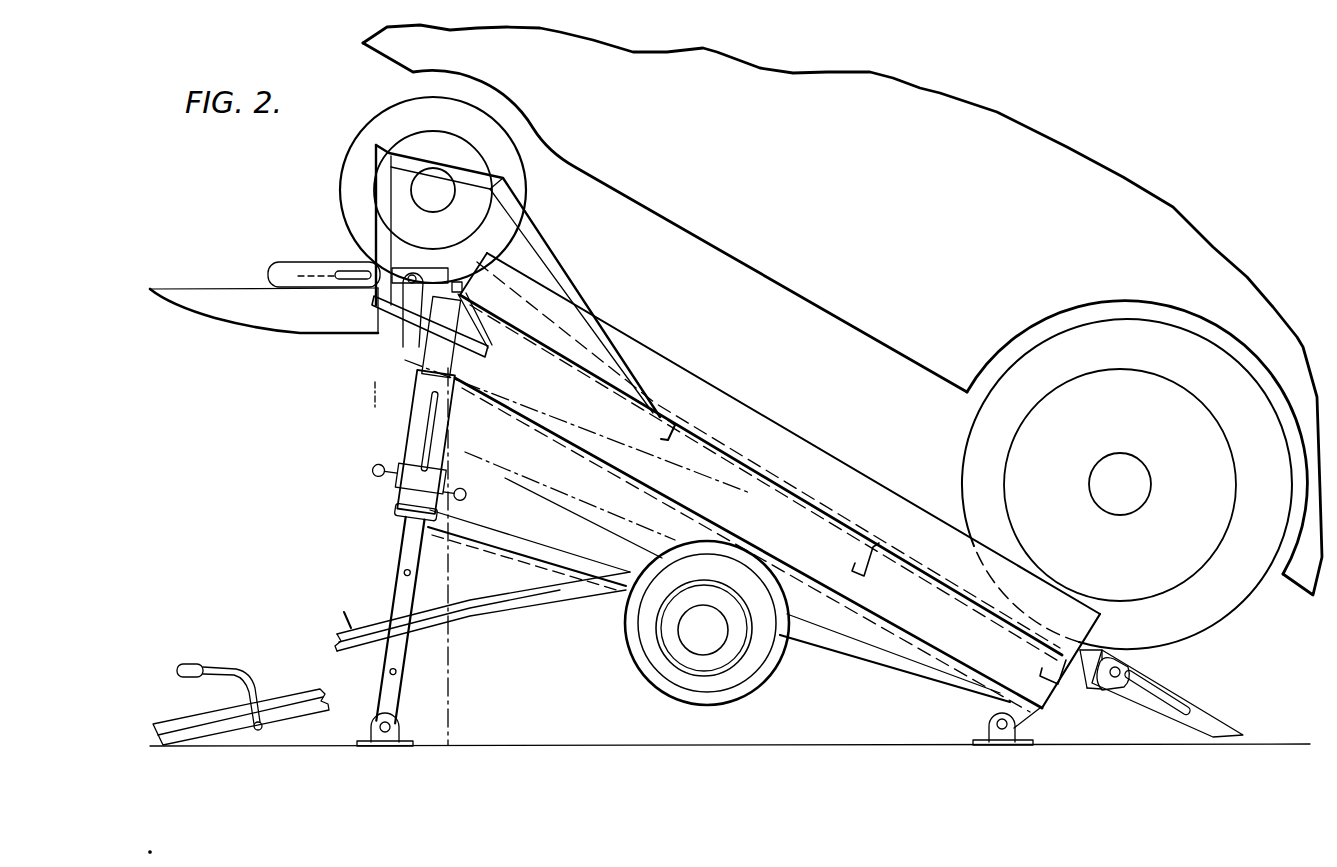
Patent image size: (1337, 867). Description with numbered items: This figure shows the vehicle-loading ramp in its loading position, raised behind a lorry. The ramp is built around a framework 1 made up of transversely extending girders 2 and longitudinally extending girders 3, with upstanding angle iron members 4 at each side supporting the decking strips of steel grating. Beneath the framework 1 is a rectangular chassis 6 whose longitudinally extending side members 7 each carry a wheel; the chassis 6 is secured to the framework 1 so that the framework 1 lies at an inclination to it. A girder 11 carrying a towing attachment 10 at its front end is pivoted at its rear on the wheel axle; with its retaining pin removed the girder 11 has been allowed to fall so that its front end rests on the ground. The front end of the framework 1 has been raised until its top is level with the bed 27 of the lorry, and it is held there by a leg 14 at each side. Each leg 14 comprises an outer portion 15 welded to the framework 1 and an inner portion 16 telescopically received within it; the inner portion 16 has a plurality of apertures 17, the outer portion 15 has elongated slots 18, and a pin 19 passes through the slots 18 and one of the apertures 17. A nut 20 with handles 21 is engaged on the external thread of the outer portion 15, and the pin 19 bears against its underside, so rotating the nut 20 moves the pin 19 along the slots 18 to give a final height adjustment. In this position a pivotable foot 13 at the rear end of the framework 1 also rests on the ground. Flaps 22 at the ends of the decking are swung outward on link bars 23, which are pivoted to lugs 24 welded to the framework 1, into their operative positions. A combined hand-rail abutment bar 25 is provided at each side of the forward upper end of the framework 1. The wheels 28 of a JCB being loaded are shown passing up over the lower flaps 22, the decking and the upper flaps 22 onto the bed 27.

The framework 1 is at (846, 448).
The transversely extending girders 2 is at (471, 326).
The longitudinally extending girders 3 is at (780, 540).
The upstanding angle iron members 4 is at (781, 439).
The rectangular chassis 6 is at (824, 659).
The longitudinally extending side members 7 is at (873, 652).
The towing attachment 10 is at (247, 675).
The girder 11 is at (305, 687).
The pivotable foot 13 is at (990, 727).
The leg 14 is at (394, 414).
The outer portion 15 is at (437, 360).
The inner portion 16 is at (396, 692).
The apertures 17 is at (400, 620).
The elongated slots 18 is at (410, 427).
The pin 19 is at (402, 507).
The nut 20 is at (432, 475).
The handles 21 is at (372, 474).
The flap 22 is at (312, 264).
The link bars 23 is at (1155, 692).
The lugs 24 is at (1112, 688).
The combined hand-rail abutment bar 25 is at (505, 181).
The bed of the lorry 27 is at (228, 288).
The wheels of a J C B 28 is at (398, 104).